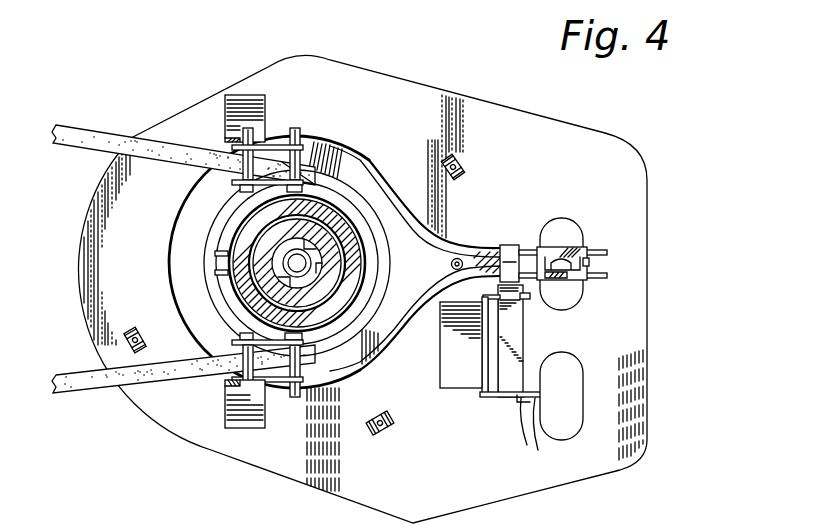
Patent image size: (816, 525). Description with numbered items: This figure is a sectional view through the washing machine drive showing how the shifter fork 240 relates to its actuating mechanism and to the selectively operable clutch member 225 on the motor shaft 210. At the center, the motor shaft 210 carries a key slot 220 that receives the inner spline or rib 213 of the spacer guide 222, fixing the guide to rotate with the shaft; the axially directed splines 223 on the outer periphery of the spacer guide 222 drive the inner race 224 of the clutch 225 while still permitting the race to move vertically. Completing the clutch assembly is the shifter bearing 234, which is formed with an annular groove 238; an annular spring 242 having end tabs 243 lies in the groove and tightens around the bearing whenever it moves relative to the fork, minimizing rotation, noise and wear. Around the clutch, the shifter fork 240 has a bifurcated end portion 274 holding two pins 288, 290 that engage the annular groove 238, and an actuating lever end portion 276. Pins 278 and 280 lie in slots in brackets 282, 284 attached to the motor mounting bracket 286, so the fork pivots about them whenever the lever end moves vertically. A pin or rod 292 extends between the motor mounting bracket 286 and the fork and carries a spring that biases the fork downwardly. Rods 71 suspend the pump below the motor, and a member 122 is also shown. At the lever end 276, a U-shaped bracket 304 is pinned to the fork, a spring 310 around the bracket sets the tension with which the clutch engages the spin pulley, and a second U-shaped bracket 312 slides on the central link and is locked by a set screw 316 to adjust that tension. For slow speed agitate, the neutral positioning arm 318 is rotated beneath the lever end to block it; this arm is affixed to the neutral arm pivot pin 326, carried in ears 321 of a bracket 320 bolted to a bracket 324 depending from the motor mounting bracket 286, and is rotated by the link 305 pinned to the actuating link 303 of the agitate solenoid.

The rods 71 is at (459, 155).
The beam 122 is at (88, 385).
The motor shaft 210 is at (338, 238).
The inner spline or rib 213 is at (322, 268).
The key slot 220 is at (305, 330).
The spacer guide 222 is at (314, 250).
The axially directed splines 223 is at (258, 228).
The inner race 224 is at (348, 250).
The selectively operable clutch member 225 is at (228, 284).
The shifter bearing 234 is at (310, 197).
The annular groove 238 is at (216, 273).
The shifter fork 240 is at (425, 313).
The annular spring 242 is at (206, 232).
The end tabs 243 is at (216, 253).
The bifurcated end portion 274 is at (272, 146).
The actuating lever end portion 276 is at (601, 249).
The pin 278 is at (249, 128).
The pin 280 is at (253, 388).
The bracket 282 is at (227, 110).
The bracket 284 is at (228, 394).
The motor mounting bracket 286 is at (632, 166).
The pin 288 is at (312, 140).
The pin 290 is at (302, 386).
The pin or rod 292 is at (460, 258).
The actuating link 303 is at (569, 387).
The U-shaped bracket 304 is at (564, 250).
The link 305 is at (532, 403).
The spring 310 is at (549, 242).
The U-shaped bracket 312 is at (589, 262).
The set screw 316 is at (563, 279).
The neutral positioning arm 318 is at (511, 338).
The bracket 320 is at (492, 380).
The ears 321 is at (488, 400).
The bracket 324 is at (467, 370).
The neutral arm pivot pin 326 is at (520, 403).